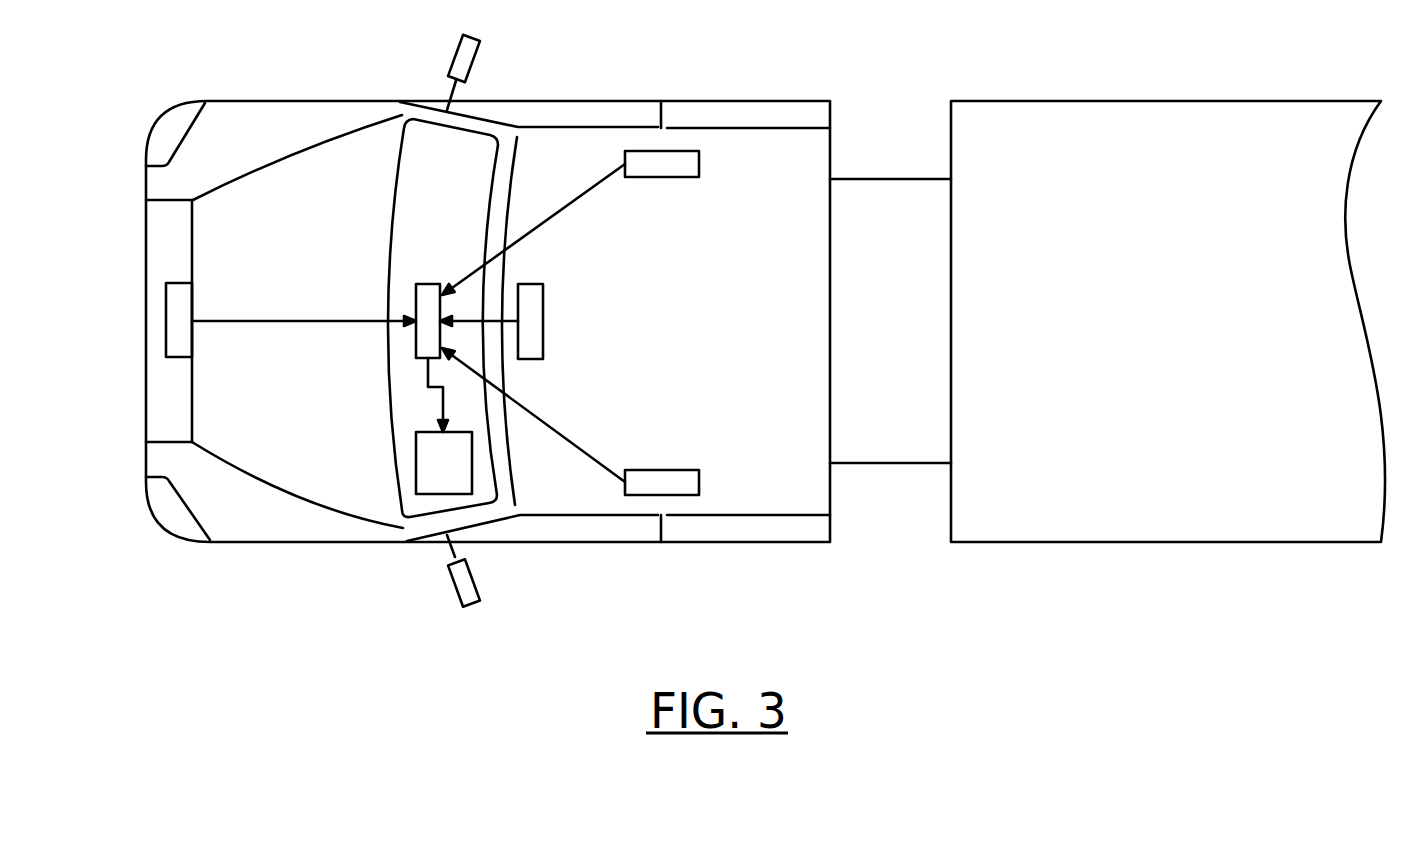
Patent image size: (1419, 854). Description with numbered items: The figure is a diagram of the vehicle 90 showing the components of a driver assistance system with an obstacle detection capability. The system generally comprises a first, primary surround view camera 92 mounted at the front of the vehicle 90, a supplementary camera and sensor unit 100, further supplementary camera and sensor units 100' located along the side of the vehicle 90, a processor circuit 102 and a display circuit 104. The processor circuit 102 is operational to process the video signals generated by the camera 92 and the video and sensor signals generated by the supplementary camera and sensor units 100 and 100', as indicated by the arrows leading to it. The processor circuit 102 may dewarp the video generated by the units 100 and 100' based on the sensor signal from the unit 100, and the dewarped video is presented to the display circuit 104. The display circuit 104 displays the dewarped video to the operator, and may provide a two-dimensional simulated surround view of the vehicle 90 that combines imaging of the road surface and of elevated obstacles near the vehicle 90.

The vehicle 90 is at (262, 101).
The primary surround view camera 92 is at (189, 306).
The supplementary camera and sensor unit 100 is at (565, 309).
The supplementary camera and sensor unit 100' is at (688, 323).
The processor circuit 102 is at (428, 283).
The display circuit 104 is at (415, 468).